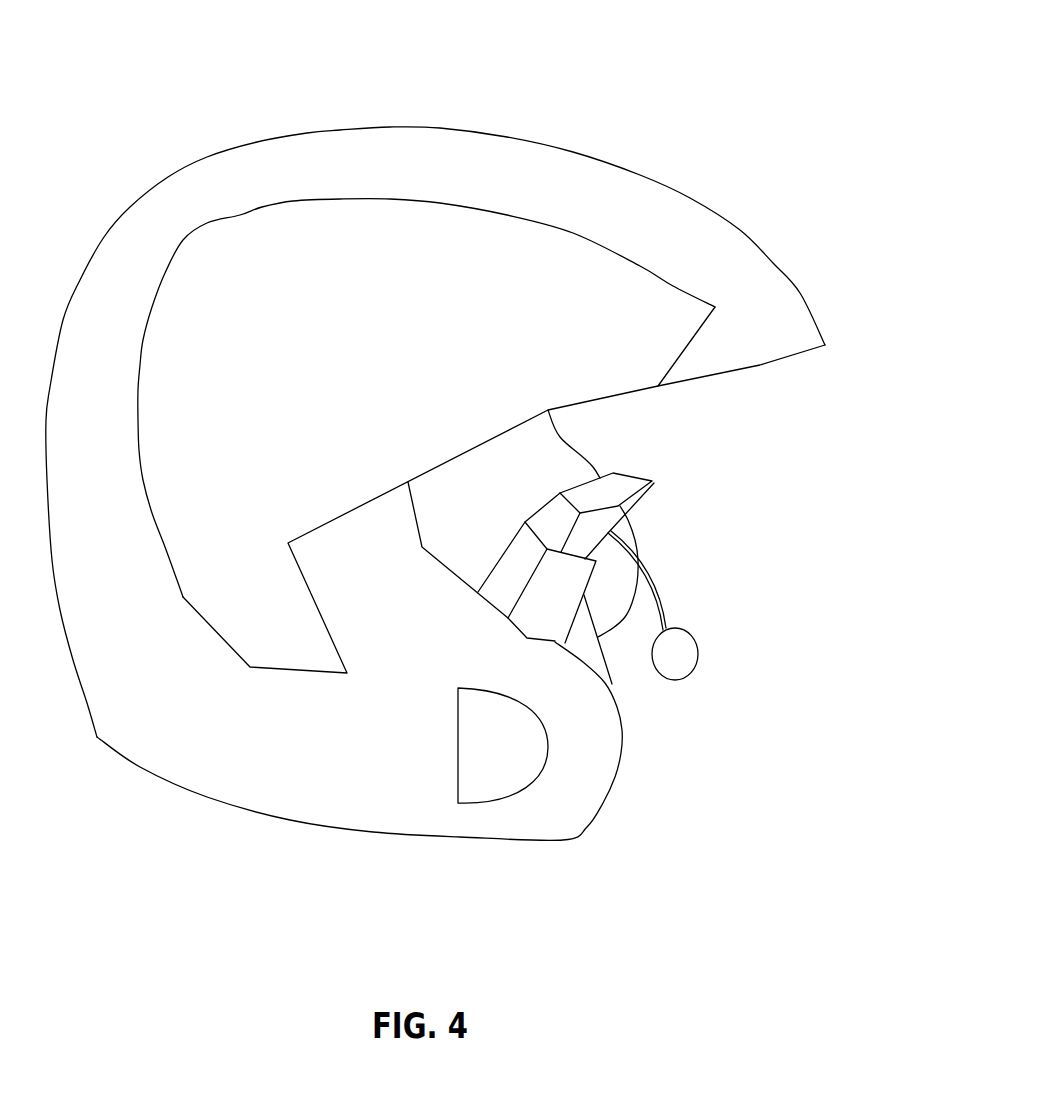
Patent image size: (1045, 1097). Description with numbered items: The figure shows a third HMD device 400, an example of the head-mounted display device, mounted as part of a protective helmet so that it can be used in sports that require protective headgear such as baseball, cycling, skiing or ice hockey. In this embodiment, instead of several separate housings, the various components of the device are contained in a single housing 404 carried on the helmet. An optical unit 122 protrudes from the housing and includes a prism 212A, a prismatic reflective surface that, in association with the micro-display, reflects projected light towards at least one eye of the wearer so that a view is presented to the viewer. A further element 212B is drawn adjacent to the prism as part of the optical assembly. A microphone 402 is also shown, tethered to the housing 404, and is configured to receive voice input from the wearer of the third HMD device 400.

The third HMD device 400 is at (708, 98).
The optical unit 122 is at (617, 525).
The prism 212A is at (654, 483).
The second housing unit 212B is at (592, 561).
The housing 404 is at (544, 621).
The microphone 402 is at (685, 655).